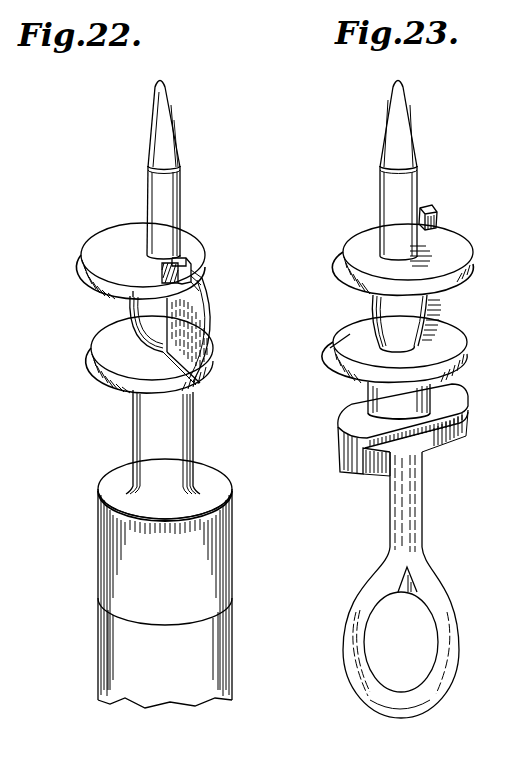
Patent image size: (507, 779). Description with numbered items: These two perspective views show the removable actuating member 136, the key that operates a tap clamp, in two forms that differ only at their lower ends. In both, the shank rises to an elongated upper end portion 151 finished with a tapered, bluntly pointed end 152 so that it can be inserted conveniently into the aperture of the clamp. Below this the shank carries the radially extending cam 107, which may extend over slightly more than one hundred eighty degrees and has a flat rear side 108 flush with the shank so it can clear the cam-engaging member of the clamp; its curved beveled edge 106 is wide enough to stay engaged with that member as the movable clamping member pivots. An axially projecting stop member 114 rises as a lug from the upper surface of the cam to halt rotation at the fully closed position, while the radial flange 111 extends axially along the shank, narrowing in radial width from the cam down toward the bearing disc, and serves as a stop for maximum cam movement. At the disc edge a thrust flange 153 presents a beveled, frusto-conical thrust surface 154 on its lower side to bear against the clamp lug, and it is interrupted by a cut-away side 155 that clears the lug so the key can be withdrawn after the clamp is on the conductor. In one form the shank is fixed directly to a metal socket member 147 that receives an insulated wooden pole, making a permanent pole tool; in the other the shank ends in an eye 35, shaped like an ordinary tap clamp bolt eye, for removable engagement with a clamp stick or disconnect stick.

In FIG. 23, the eye 35 is at (346, 637).
In FIG. 22, the curved beveled edge 106 is at (106, 288).
In FIG. 23, the curved beveled edge 106 is at (447, 283).
In FIG. 22, the cam 107 is at (109, 307).
In FIG. 23, the cam 107 is at (361, 308).
In FIG. 22, the flat rear side 108 is at (144, 264).
In FIG. 23, the flat rear side 108 is at (406, 262).
In FIG. 22, the radial flange 111 is at (208, 328).
In FIG. 22, the stop member 114 is at (193, 270).
In FIG. 23, the stop member 114 is at (438, 215).
In FIG. 22, the actuating member 136 is at (165, 211).
In FIG. 23, the actuating member 136 is at (398, 195).
In FIG. 22, the socket member 147 is at (211, 572).
In FIG. 22, the upper end portion 151 is at (175, 131).
In FIG. 23, the upper end portion 151 is at (414, 130).
In FIG. 22, the tapered bluntly pointed end 152 is at (167, 81).
In FIG. 23, the tapered bluntly pointed end 152 is at (405, 80).
In FIG. 22, the thrust flange 153 is at (131, 364).
In FIG. 23, the thrust flange 153 is at (403, 356).
In FIG. 22, the frusto-conical thrust surface 154 is at (124, 388).
In FIG. 23, the frusto-conical thrust surface 154 is at (456, 379).
In FIG. 23, the cut-away side 155 is at (350, 335).